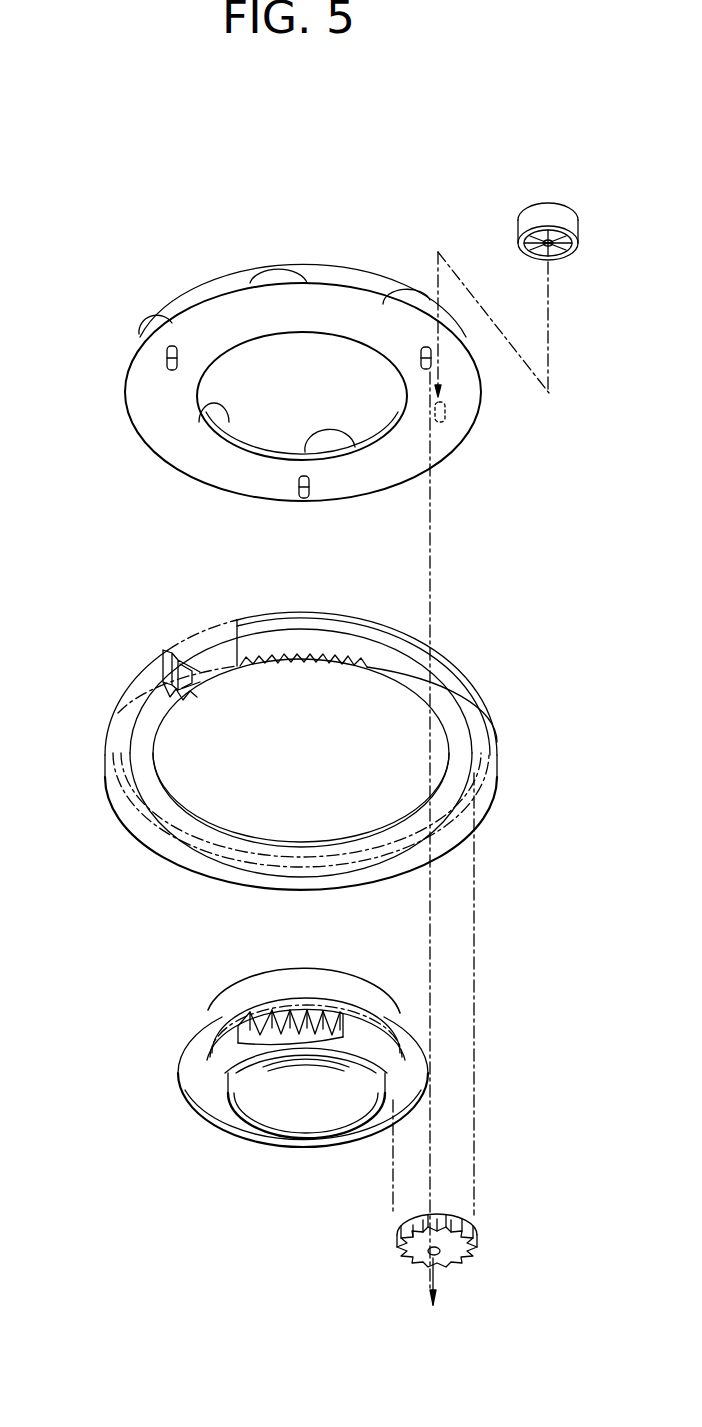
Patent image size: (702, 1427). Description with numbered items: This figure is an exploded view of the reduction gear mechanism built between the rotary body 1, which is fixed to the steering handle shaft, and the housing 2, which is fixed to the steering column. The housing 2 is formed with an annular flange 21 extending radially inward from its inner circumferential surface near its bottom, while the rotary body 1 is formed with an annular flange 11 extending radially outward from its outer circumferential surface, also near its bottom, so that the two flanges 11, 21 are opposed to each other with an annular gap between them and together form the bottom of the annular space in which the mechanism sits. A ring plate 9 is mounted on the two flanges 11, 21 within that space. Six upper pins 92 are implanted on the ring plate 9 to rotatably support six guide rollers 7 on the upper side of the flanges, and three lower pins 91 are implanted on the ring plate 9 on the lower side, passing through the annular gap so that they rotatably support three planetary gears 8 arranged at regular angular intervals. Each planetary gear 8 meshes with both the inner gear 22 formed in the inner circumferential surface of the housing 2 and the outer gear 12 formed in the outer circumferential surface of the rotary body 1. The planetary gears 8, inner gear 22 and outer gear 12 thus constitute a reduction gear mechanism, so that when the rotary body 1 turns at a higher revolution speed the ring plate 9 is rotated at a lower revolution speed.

The rotary body 1 is at (275, 1063).
The annular flange 11 is at (190, 1057).
The outer gear 12 is at (252, 1028).
The housing 2 is at (275, 751).
The annular flange 21 is at (143, 751).
The inner gear 22 is at (307, 664).
The guide roller 7 is at (272, 266).
The planetary gear 8 is at (409, 1257).
The ring plate 9 is at (288, 382).
The lower pin 91 is at (167, 356).
The upper pin 92 is at (447, 417).